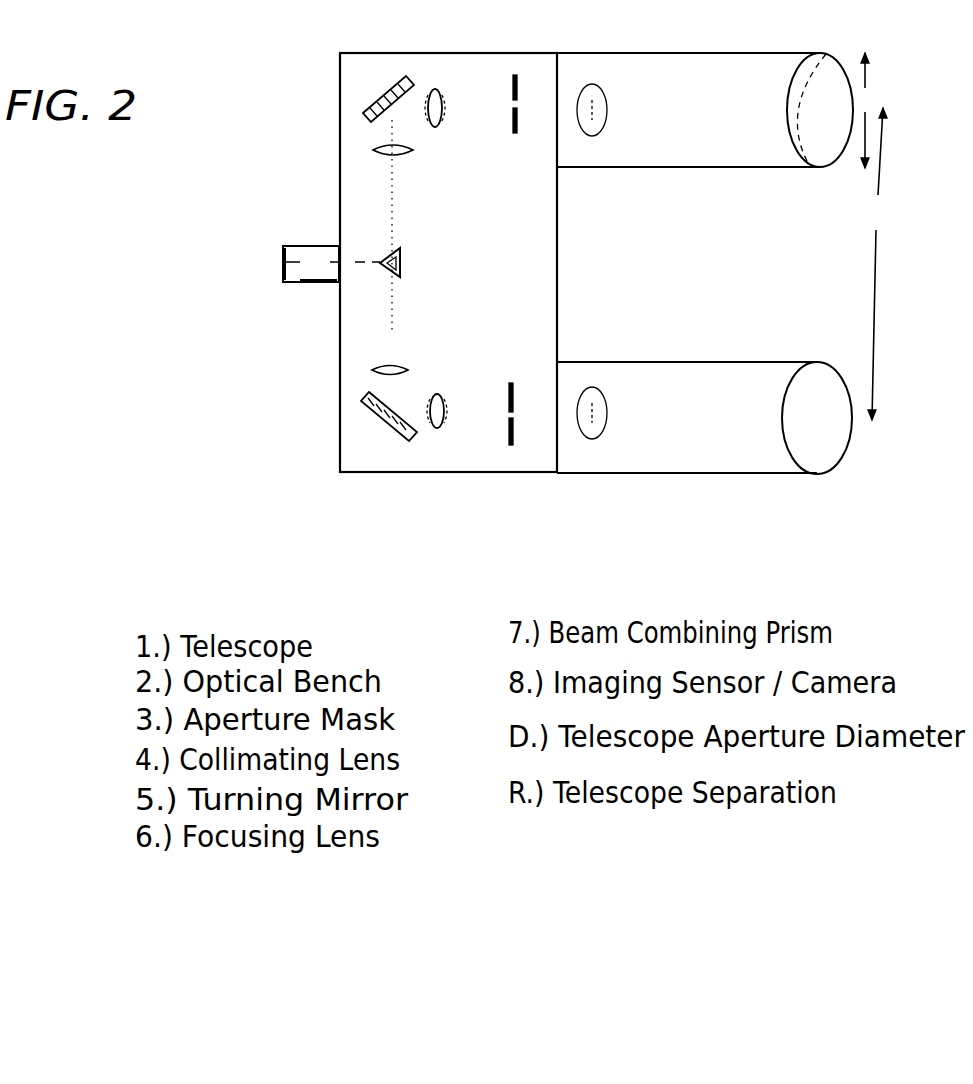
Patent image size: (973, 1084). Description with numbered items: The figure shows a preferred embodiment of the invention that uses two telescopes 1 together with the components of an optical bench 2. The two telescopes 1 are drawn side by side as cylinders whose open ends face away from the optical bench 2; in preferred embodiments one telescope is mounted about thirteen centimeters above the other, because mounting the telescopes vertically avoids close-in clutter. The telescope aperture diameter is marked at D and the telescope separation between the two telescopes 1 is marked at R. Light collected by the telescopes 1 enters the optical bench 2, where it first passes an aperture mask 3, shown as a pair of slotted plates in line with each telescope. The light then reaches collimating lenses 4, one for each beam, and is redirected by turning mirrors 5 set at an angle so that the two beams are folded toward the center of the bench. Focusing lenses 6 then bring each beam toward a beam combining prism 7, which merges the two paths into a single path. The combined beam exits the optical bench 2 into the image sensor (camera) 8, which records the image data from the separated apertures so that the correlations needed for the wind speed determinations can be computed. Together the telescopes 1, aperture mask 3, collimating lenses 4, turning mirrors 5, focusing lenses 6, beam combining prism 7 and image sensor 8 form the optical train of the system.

The telescope 1 is at (705, 177).
The optical bench 2 is at (515, 302).
The aperture mask 3 is at (505, 142).
The collimating lenses 4 is at (437, 82).
The turning mirrors 5 is at (380, 85).
The focusing lenses 6 is at (368, 153).
The beam combining prism 7 is at (378, 275).
The image sensor (camera) 8 is at (300, 228).
The telescope aperture diameter D is at (865, 110).
The telescope separation R is at (878, 264).